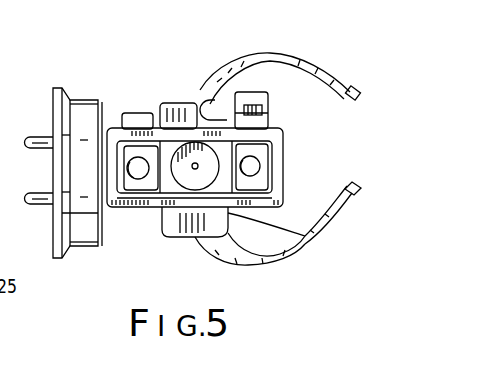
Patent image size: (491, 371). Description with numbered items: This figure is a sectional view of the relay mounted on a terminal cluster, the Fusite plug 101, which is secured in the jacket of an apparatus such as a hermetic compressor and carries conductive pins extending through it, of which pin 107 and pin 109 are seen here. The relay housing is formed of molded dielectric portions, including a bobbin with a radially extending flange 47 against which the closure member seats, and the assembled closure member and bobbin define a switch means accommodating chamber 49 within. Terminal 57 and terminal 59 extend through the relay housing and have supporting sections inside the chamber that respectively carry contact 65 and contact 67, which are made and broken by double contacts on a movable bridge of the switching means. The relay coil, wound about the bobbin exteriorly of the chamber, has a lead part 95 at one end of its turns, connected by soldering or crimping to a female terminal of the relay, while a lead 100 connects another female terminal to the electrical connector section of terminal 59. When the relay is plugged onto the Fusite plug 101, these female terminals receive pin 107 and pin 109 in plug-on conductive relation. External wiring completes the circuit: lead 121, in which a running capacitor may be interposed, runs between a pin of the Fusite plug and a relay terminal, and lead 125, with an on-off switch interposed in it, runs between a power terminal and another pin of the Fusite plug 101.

The Fusite plug 101 is at (51, 65).
The conductive pin 107 is at (44, 137).
The conductive pin 109 is at (44, 193).
The flange 47 is at (284, 172).
The contact 67 is at (133, 179).
The switch means accommodating chamber 49 is at (193, 172).
The contact 65 is at (263, 166).
The terminal 59 is at (129, 112).
The lead 100 is at (144, 113).
The terminal 57 is at (256, 97).
The lead part of coil 95 is at (243, 60).
The lead 125 is at (292, 56).
The lead 121 is at (293, 240).